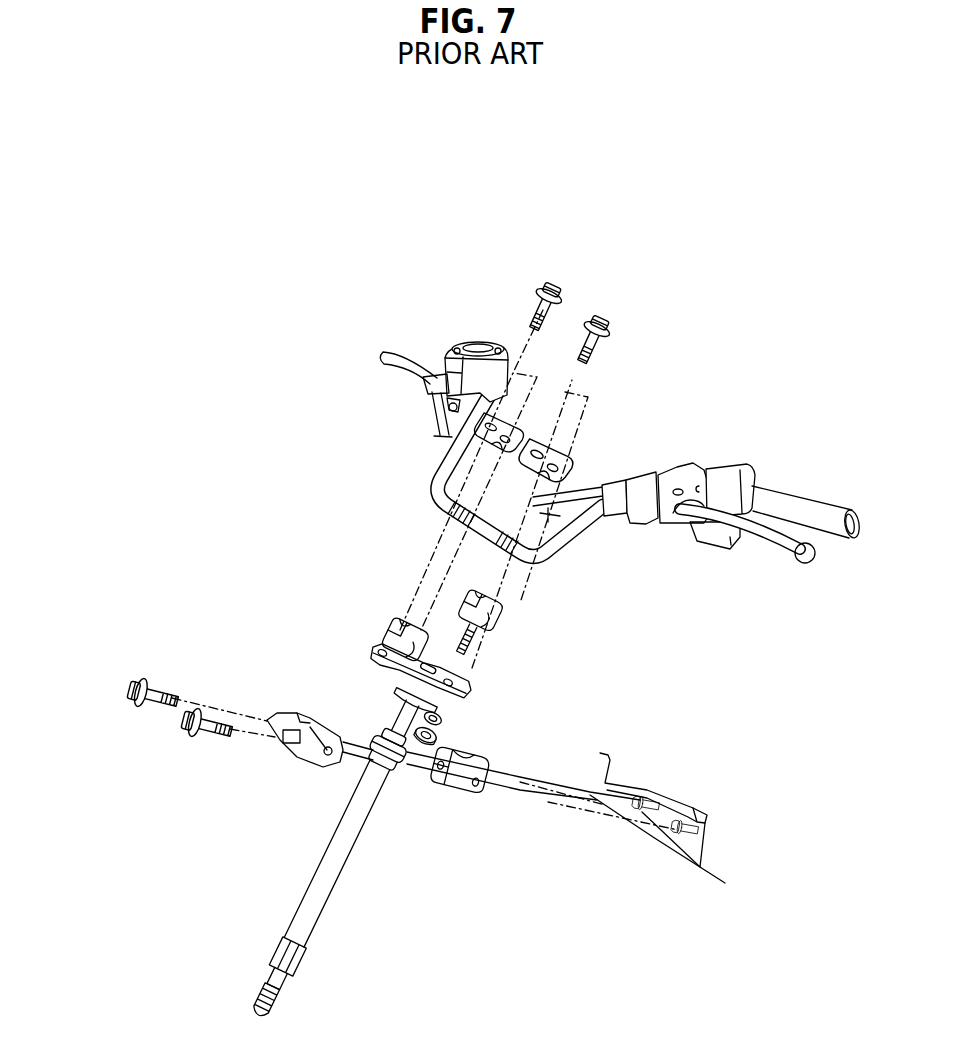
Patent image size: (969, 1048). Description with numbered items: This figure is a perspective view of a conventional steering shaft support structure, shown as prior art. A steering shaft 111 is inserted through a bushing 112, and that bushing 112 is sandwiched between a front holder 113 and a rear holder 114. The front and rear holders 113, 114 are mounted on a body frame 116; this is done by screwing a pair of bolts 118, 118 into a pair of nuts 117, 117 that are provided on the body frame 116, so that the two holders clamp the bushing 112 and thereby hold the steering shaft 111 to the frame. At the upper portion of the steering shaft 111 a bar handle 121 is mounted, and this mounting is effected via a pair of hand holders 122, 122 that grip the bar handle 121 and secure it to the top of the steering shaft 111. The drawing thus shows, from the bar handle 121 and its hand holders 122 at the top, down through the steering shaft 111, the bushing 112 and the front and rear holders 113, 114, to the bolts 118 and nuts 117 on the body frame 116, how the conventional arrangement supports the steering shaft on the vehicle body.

The steering shaft 111 is at (343, 870).
The bushing 112 is at (377, 727).
The front holder 113 is at (310, 717).
The rear holder 114 is at (490, 753).
The body frame 116 is at (665, 824).
The nut 117 is at (641, 797).
The bolt 118 is at (142, 680).
The bar handle 121 is at (437, 463).
The hand holder 122 is at (388, 630).